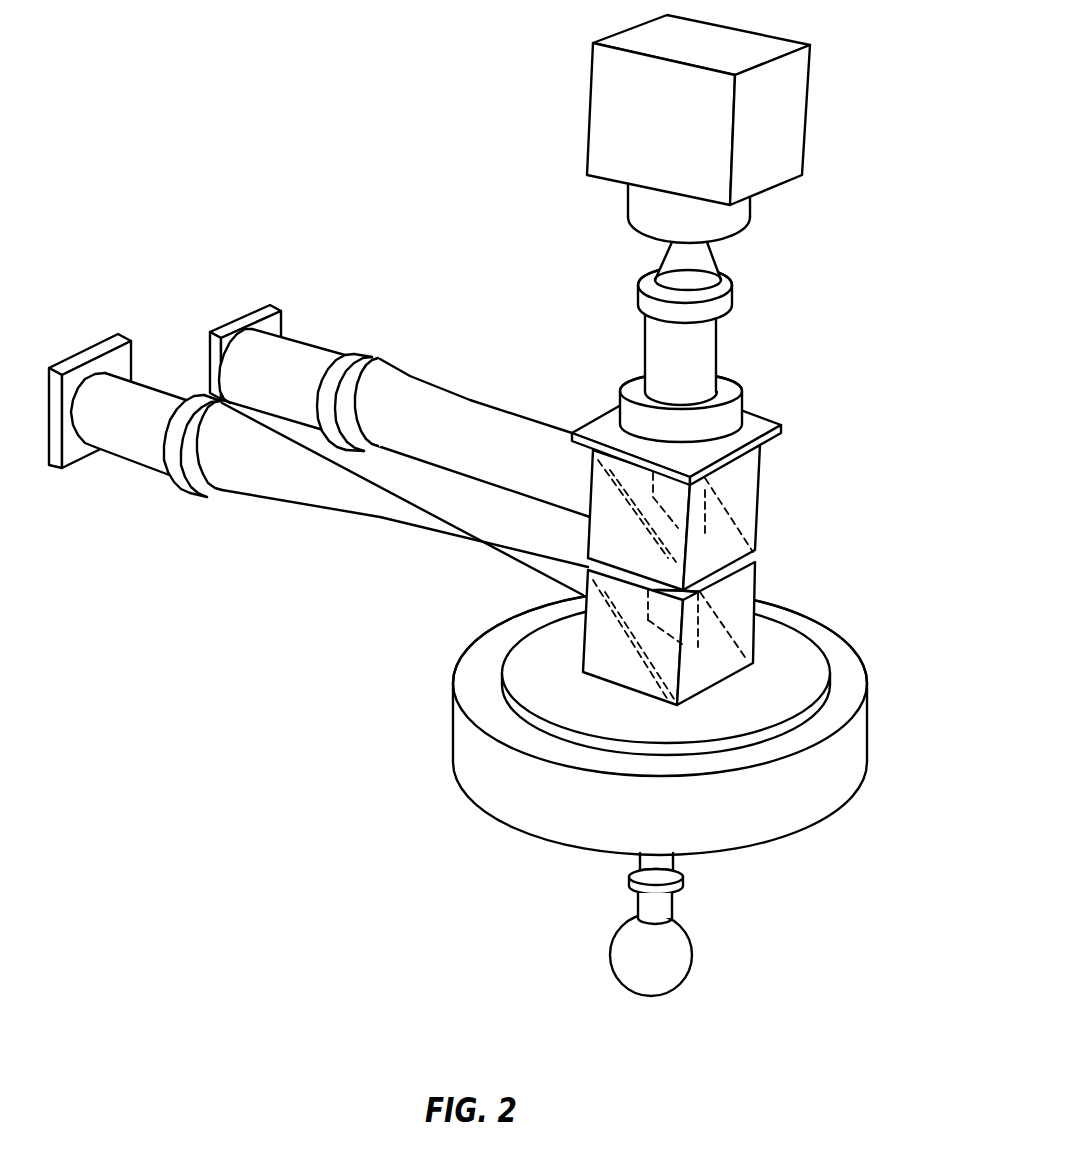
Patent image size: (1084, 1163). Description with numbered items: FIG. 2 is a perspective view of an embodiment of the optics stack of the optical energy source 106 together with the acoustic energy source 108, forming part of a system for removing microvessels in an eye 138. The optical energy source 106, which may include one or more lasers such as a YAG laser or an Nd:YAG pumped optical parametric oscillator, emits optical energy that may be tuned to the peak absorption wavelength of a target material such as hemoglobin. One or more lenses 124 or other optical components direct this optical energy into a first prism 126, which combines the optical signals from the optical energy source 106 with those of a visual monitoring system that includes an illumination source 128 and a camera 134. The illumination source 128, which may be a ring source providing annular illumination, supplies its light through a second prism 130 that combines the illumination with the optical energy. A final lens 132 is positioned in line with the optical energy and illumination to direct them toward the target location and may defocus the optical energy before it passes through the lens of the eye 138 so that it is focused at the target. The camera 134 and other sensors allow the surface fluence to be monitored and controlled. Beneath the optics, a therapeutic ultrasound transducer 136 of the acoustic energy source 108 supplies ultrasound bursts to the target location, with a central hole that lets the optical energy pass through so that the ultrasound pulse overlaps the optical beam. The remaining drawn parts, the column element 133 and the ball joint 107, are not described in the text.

The optical energy source 106 is at (316, 409).
The lenses 124 is at (360, 353).
The illumination source 128 is at (133, 442).
The camera 134 is at (805, 149).
The column joint 133 is at (717, 354).
The first prism 126 is at (759, 497).
The second prism 130 is at (754, 627).
The therapeutic ultrasound transducer 136 is at (873, 727).
The final lens 132 is at (685, 880).
The acoustic energy source 108 is at (707, 828).
The ball joint 107 is at (786, 979).
The eye 138 is at (648, 969).